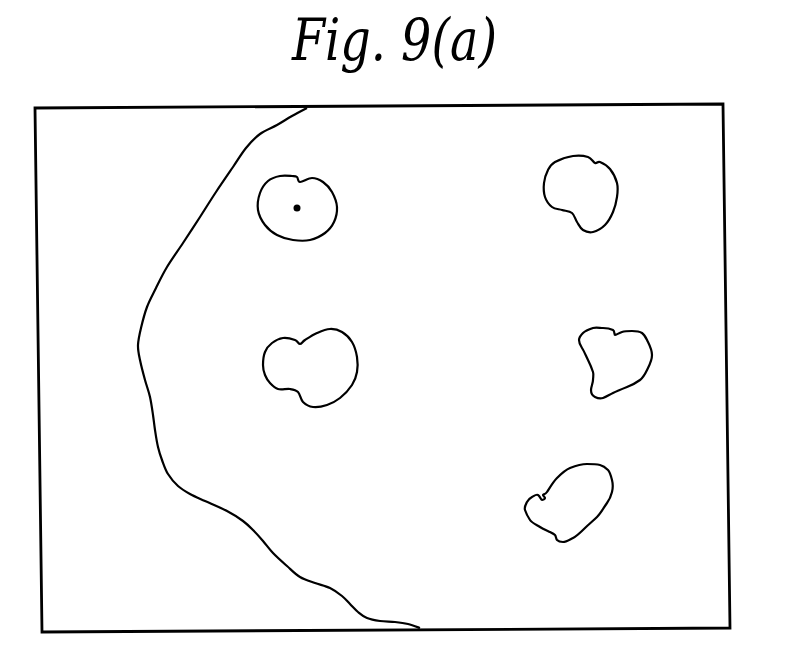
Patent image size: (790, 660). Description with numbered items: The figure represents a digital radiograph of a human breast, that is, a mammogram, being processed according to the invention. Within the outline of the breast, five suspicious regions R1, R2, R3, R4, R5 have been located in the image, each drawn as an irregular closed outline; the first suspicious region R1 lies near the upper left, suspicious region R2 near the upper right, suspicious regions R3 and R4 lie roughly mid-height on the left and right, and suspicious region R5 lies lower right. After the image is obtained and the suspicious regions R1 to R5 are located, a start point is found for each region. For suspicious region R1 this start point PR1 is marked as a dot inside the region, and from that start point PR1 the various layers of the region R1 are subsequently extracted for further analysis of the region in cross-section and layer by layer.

The suspicious region R1 is at (320, 182).
The suspicious region R2 is at (609, 168).
The suspicious region R3 is at (344, 329).
The suspicious region R4 is at (635, 330).
The suspicious region R5 is at (607, 468).
The start point PR1 is at (297, 211).